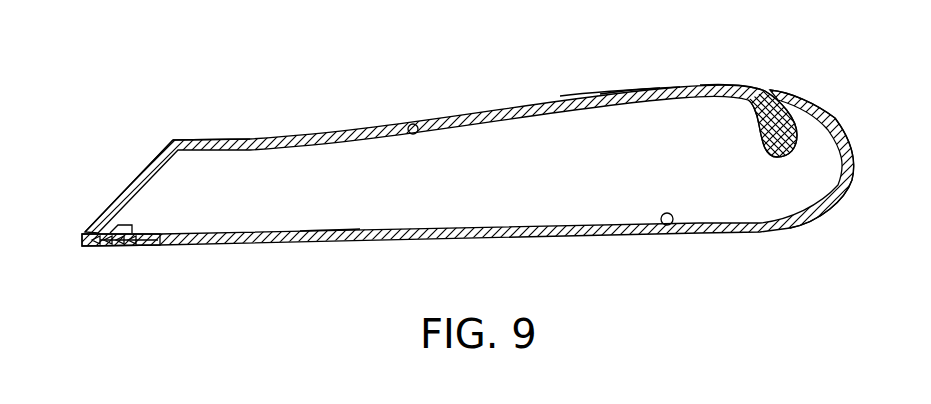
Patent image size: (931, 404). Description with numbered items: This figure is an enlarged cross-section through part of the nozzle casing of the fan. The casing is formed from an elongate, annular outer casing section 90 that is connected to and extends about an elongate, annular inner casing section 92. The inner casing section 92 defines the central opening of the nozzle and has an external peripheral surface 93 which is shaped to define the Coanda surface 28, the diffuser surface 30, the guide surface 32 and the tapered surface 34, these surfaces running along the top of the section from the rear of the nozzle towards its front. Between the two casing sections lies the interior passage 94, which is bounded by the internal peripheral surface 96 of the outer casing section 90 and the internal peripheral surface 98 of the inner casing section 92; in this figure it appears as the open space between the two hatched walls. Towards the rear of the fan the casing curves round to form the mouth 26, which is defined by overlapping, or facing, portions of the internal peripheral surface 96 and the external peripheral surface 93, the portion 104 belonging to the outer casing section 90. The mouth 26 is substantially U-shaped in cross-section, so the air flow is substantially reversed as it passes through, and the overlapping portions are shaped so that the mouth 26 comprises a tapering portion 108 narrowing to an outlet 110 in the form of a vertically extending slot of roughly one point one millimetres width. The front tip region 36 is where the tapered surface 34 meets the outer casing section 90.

The mouth 26 is at (785, 199).
The Coanda surface 28 is at (733, 86).
The diffuser surface 30 is at (503, 107).
The guide surface 32 is at (237, 140).
The tapered surface 34 is at (152, 160).
The tip joint 36 is at (82, 236).
The outer casing section 90 is at (527, 237).
The inner casing section 92 is at (582, 102).
The external peripheral surface 93 is at (615, 85).
The interior passage 94 is at (342, 215).
The internal peripheral surface 96 is at (667, 225).
The internal peripheral surface 98 is at (413, 124).
The overlapping portion 104 is at (792, 103).
The tapering portion 108 is at (807, 122).
The outlet 110 is at (762, 84).